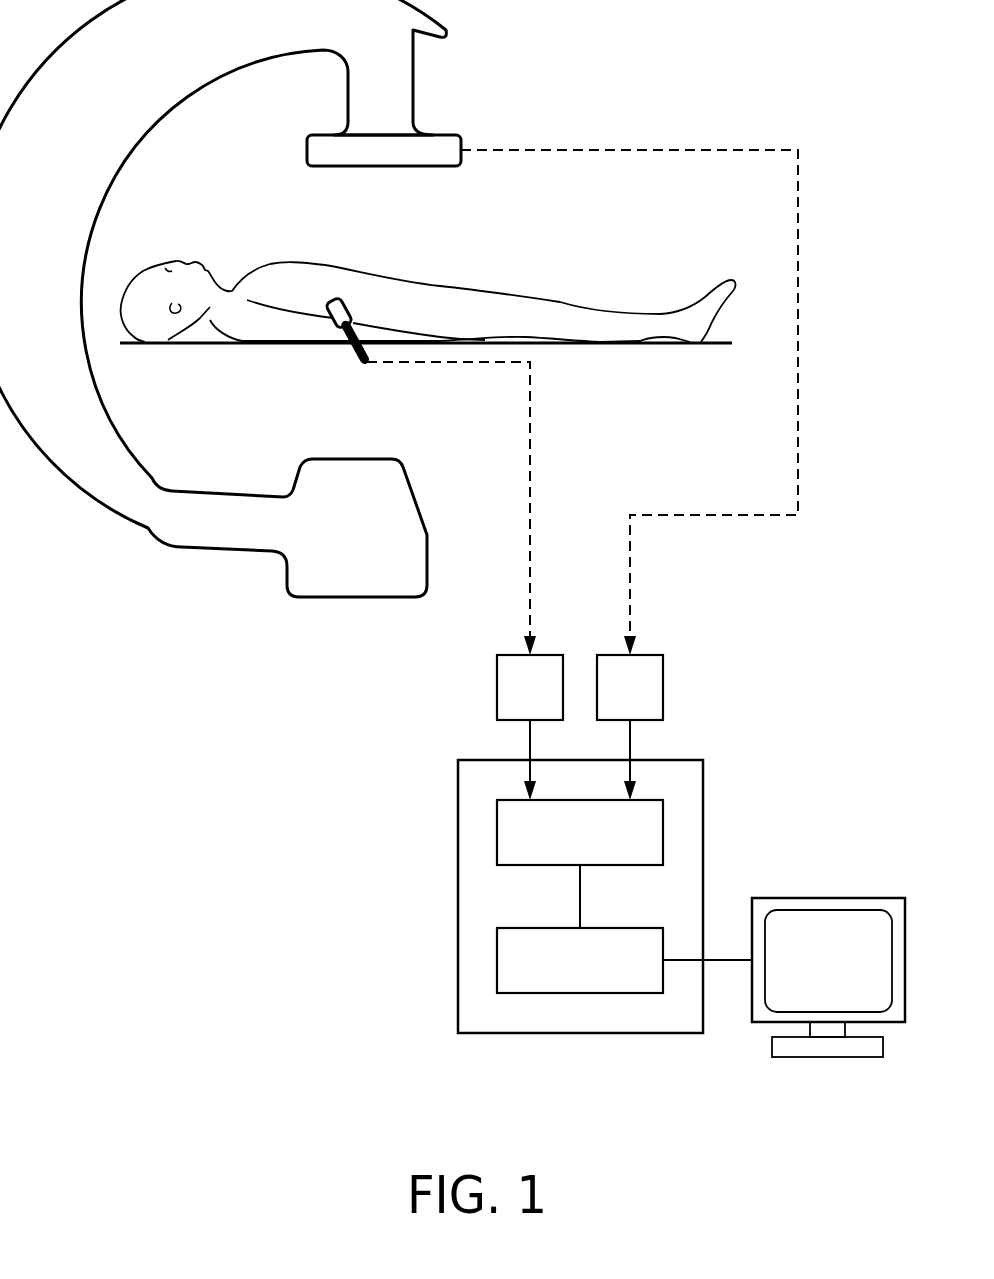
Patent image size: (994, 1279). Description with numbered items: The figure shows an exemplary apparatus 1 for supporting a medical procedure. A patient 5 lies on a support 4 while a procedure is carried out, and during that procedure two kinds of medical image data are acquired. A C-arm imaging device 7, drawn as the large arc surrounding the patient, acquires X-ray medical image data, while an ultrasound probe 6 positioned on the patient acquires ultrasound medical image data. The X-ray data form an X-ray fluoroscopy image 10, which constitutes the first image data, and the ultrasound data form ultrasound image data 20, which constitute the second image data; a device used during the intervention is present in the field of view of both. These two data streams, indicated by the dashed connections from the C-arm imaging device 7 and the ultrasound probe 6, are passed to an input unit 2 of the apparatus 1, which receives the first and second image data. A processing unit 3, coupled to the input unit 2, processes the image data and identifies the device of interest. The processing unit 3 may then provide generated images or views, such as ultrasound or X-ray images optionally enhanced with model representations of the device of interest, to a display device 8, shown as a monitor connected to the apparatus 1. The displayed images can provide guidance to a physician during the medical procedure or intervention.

The apparatus 1 is at (547, 896).
The input unit 2 is at (573, 846).
The processing unit 3 is at (573, 974).
The support 4 is at (720, 346).
The patient 5 is at (458, 285).
The ultrasound probe 6 is at (357, 360).
The C-arm imaging device 7 is at (203, 533).
The display device 8 is at (832, 897).
The X-ray fluoroscopy image 10 is at (615, 702).
The ultrasound image data 20 is at (515, 702).